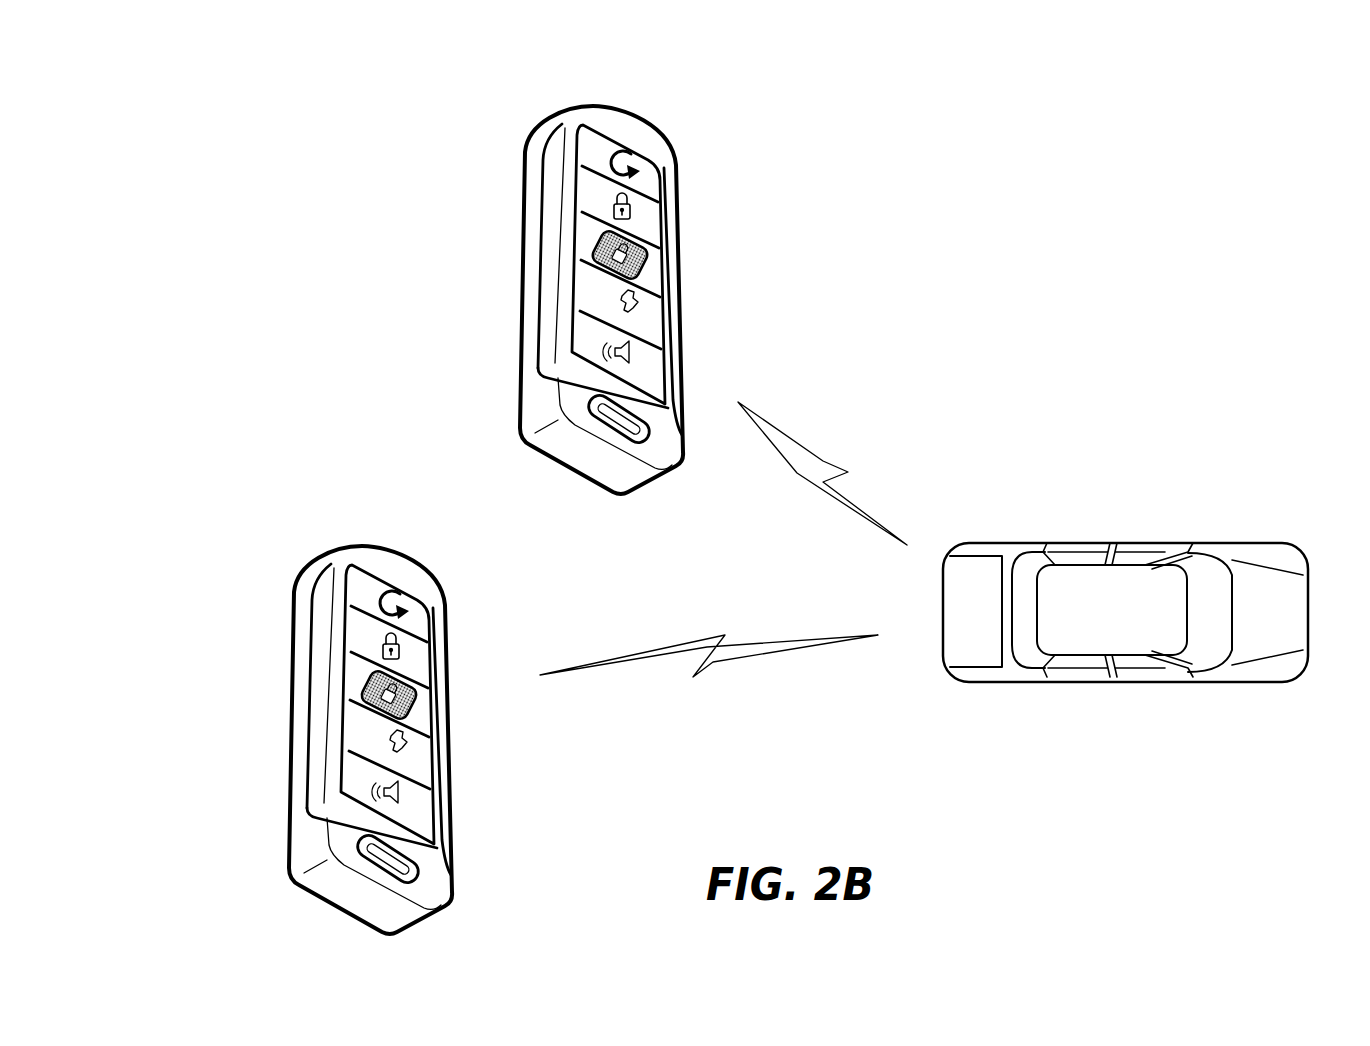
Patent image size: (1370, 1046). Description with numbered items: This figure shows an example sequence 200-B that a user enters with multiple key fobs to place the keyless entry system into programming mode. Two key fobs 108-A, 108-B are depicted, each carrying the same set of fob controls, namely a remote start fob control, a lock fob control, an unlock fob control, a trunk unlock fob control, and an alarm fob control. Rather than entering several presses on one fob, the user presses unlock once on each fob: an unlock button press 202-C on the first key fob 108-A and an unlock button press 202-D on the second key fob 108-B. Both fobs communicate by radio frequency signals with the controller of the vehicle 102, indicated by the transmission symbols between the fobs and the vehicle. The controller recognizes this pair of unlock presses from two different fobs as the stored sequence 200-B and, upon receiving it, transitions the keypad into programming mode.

The sequence 200-B is at (286, 80).
The key fob 108-A is at (372, 714).
The key fob 108-B is at (593, 100).
The unlock button press 202-C is at (293, 659).
The unlock button press 202-D is at (597, 243).
The vehicle 102 is at (1145, 543).